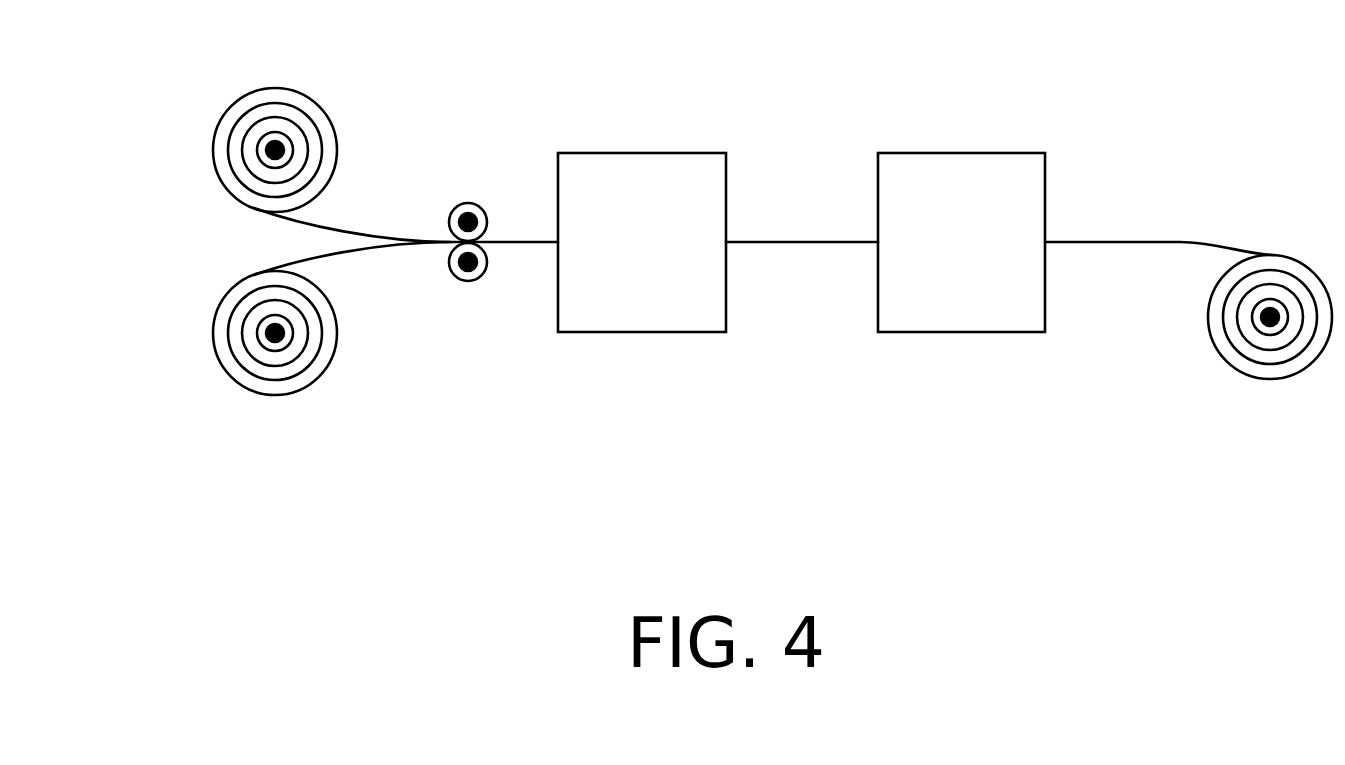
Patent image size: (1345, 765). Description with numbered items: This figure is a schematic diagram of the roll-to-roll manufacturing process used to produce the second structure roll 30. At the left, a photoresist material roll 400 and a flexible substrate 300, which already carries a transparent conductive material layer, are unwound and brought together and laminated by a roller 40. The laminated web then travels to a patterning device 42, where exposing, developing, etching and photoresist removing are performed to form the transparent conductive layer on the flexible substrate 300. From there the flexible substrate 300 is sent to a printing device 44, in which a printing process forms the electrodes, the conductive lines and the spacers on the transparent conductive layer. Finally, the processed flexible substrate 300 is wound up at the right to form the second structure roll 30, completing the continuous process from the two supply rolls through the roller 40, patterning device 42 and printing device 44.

The photoresist material roll 400 is at (240, 105).
The flexible substrate 300 is at (245, 380).
The roller 40 is at (473, 200).
The patterning device 42 is at (630, 175).
The printing device 44 is at (958, 170).
The second structure roll 30 is at (1270, 378).